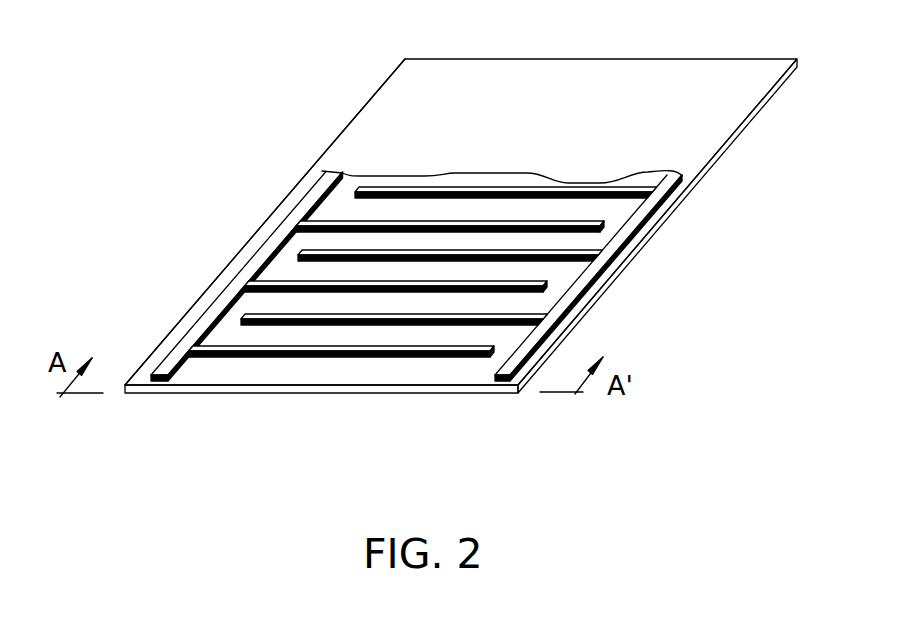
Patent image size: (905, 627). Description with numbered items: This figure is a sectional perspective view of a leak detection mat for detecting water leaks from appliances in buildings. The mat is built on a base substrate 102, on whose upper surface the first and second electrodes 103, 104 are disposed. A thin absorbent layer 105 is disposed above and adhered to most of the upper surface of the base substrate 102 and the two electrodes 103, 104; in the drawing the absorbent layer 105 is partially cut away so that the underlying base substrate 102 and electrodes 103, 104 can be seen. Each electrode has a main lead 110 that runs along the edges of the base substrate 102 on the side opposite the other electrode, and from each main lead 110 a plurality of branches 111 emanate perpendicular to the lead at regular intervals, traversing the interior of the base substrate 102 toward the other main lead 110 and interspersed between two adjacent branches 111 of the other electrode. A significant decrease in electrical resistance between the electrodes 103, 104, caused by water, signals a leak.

The base substrate 102 is at (478, 394).
The first electrode 103 is at (573, 323).
The second electrode 104 is at (170, 331).
The absorbent layer 105 is at (682, 145).
The main lead 110 is at (313, 197).
The branches 111 is at (327, 223).